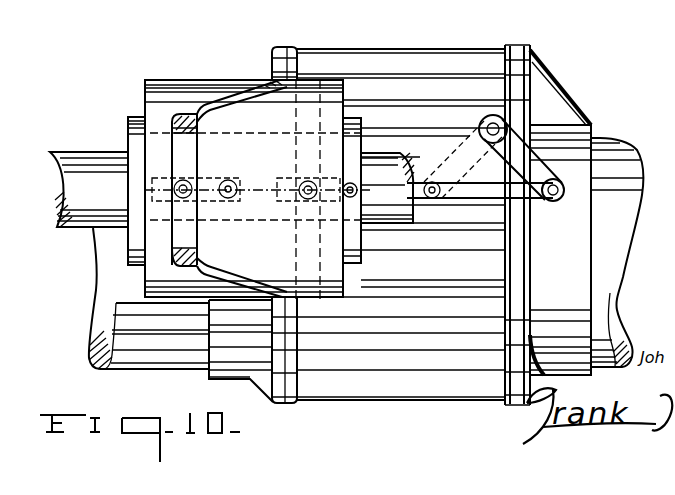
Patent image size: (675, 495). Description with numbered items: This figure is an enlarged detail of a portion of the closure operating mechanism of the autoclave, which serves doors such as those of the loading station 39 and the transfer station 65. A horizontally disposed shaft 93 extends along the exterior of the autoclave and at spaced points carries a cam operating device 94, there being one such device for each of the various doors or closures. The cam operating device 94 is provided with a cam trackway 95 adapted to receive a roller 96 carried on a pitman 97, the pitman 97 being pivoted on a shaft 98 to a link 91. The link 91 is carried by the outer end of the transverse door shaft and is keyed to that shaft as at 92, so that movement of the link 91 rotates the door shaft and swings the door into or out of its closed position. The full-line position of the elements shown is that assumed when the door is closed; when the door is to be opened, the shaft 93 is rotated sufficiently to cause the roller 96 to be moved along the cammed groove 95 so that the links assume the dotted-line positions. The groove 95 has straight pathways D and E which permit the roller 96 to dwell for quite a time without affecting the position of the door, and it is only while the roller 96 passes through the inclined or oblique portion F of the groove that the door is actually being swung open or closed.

The loading station 39 is at (129, 113).
The transfer station 65 is at (612, 143).
The link 91 is at (540, 120).
The key 92 is at (478, 116).
The horizontally disposed shaft 93 is at (100, 200).
The cam operating device 94 is at (245, 122).
The cam trackway 95 is at (185, 114).
The roller 96 is at (308, 180).
The pitman 97 is at (499, 190).
The shaft 98 is at (558, 200).
The straight pathway D is at (183, 155).
The straight pathway E is at (318, 80).
The inclined or oblique portion F is at (226, 106).